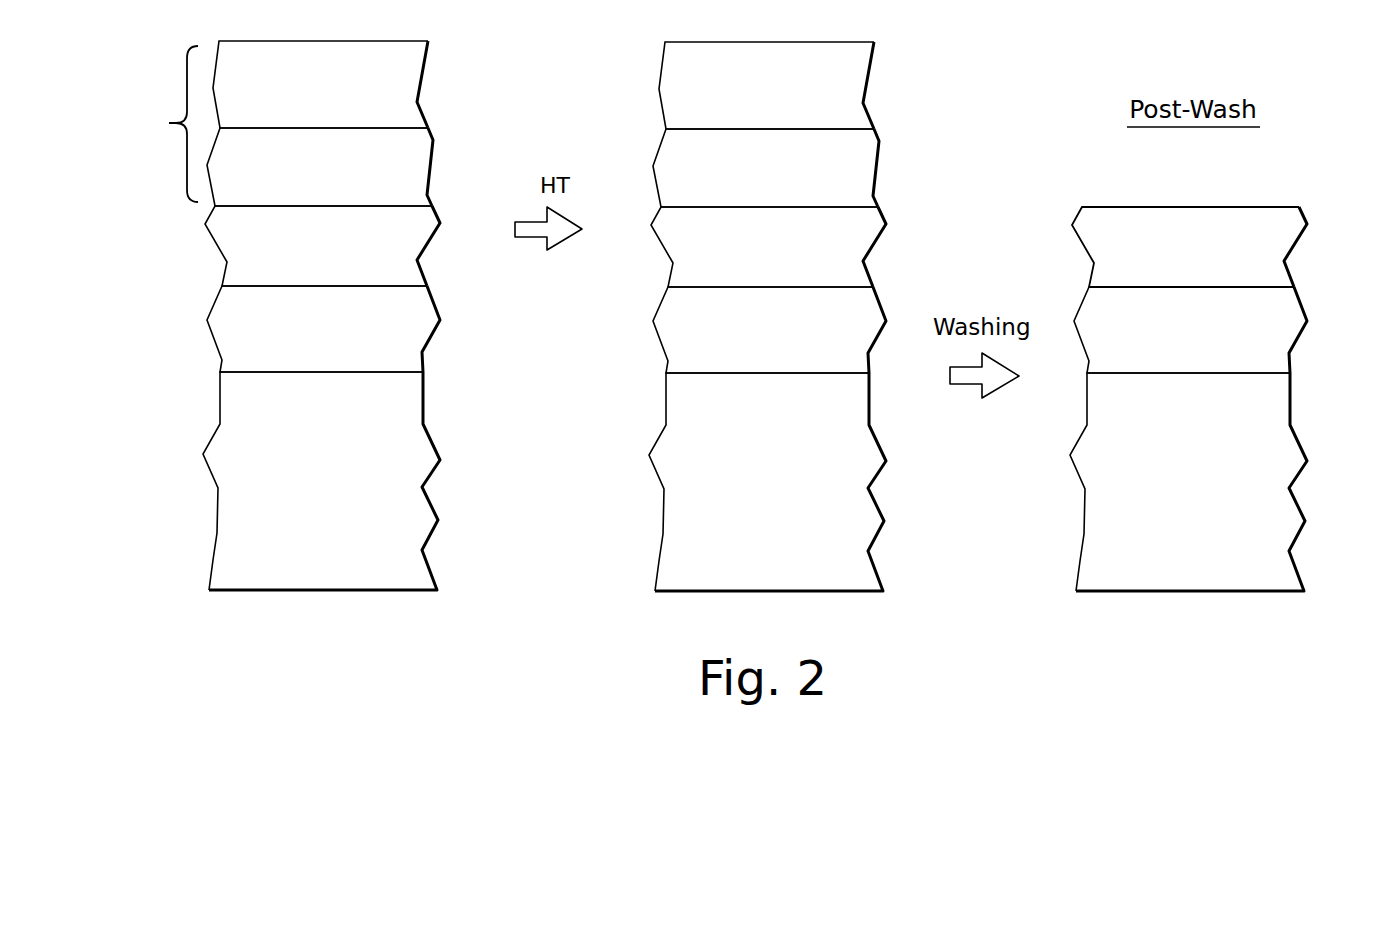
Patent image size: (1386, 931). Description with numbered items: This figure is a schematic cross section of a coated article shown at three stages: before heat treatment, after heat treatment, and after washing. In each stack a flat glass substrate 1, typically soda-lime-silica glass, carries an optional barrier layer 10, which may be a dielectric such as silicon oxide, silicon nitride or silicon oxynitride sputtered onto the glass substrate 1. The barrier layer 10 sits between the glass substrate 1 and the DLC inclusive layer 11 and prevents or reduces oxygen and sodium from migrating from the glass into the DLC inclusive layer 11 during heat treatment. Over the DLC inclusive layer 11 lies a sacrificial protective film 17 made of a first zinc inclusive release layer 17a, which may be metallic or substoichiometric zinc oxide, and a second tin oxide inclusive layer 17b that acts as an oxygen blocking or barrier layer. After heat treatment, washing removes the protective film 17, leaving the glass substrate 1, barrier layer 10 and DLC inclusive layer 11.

The glass substrate 1 is at (221, 515).
The barrier layer 10 is at (228, 329).
The DLC inclusive layer 11 is at (224, 238).
The sacrificial protective film 17 is at (166, 124).
The first zinc inclusive release layer 17a is at (405, 148).
The second tin oxide inclusive oxygen blocking layer 17b is at (405, 82).